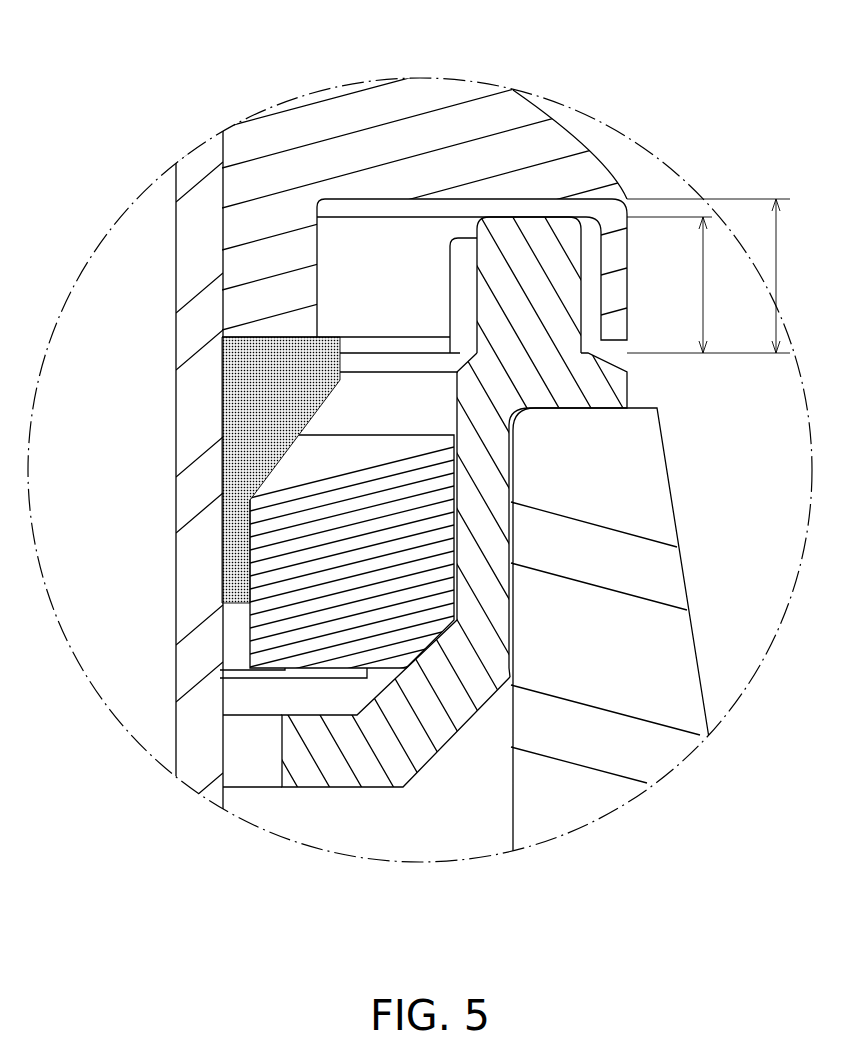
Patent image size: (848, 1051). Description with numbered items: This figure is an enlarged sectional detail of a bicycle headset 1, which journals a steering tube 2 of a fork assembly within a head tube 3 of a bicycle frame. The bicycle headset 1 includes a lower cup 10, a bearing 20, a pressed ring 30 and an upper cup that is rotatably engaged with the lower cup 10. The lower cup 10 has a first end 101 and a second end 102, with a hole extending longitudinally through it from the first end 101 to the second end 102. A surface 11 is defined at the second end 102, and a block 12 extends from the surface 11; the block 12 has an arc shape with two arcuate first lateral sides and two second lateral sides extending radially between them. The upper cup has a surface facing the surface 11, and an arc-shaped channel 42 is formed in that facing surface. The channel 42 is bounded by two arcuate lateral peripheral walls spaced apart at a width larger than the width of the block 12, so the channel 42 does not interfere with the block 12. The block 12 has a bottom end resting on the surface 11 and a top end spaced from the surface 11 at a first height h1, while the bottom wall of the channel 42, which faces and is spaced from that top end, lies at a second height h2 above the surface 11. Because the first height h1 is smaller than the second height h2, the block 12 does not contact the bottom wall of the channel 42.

The bicycle headset 1 is at (122, 81).
The steering tube 2 is at (194, 170).
The head tube 3 is at (665, 663).
The lower cup 10 is at (495, 487).
The surface 11 is at (588, 353).
The block 12 is at (519, 247).
The bearing 20 is at (423, 573).
The pressed ring 30 is at (235, 410).
The channel 42 is at (352, 255).
The first end 101 is at (508, 695).
The second end 102 is at (627, 390).
The first height h1 is at (708, 285).
The second height h2 is at (724, 276).